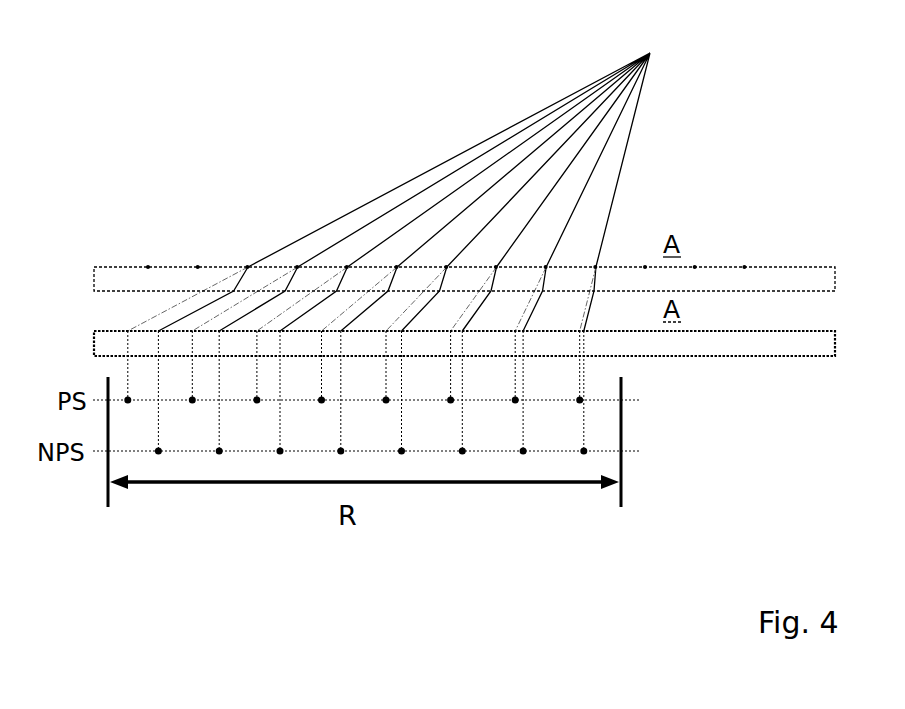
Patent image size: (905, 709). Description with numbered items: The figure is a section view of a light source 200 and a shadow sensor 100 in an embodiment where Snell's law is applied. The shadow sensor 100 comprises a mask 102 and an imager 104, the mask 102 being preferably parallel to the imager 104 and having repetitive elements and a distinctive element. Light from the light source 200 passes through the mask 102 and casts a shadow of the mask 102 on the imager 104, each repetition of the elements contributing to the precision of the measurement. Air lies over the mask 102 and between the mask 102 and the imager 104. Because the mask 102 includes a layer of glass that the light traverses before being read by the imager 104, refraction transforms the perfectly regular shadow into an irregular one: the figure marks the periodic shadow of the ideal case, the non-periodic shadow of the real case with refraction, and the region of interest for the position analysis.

The shadow sensor 100 is at (88, 268).
The mask 102 is at (758, 270).
The imager 104 is at (760, 352).
The light source 200 is at (404, 173).